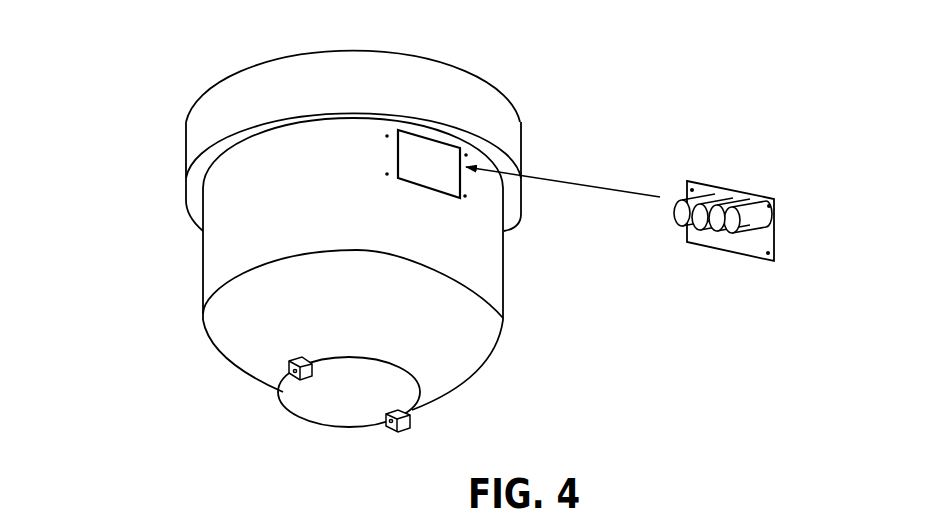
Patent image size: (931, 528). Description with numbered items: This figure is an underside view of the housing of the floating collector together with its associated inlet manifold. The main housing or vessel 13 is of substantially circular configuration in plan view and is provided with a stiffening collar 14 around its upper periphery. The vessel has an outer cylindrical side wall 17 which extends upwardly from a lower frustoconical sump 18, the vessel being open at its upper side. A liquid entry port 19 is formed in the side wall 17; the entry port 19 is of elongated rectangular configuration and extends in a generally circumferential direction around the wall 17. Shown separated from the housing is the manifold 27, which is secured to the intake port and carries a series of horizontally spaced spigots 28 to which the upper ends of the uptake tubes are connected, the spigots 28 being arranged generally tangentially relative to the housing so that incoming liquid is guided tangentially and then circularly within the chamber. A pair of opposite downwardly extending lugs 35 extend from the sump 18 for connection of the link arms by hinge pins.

The main housing or vessel 13 is at (162, 169).
The stiffening collar 14 is at (508, 106).
The outer cylindrical side wall 17 is at (211, 254).
The lower frustoconical sump 18 is at (297, 433).
The liquid entry port 19 is at (423, 132).
The manifold 27 is at (729, 176).
The spigots 28 is at (728, 233).
The lugs 35 is at (294, 374).